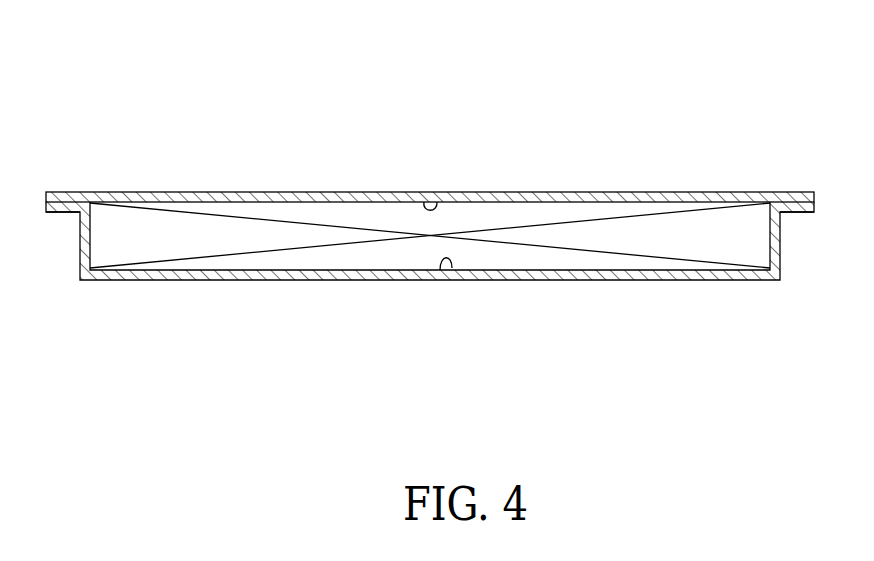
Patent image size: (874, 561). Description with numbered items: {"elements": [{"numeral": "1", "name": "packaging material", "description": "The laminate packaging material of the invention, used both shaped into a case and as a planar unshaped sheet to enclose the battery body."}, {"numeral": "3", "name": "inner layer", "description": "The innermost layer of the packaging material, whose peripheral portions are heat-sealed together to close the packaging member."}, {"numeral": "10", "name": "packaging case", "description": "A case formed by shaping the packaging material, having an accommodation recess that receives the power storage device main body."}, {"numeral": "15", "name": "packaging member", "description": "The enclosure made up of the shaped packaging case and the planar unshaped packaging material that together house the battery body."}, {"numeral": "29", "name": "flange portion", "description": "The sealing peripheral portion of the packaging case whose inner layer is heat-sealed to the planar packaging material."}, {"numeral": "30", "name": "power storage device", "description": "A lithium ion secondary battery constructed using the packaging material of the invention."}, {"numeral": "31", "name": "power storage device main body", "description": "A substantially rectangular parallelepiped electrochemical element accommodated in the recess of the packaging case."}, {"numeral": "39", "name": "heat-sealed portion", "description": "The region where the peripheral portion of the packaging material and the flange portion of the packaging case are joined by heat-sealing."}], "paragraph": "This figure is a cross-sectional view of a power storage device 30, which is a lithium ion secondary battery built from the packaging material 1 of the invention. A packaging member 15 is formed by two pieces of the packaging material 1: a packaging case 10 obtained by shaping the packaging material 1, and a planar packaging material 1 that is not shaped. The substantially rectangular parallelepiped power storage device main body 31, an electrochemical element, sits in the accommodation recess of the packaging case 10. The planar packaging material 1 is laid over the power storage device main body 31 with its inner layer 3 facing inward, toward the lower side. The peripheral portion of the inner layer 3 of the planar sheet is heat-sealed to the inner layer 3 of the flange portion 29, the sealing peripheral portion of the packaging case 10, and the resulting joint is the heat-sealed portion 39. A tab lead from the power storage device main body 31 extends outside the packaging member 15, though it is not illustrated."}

The top plate 1 is at (340, 192).
The layer 3 is at (435, 197).
The bottom plate 10 is at (285, 274).
The panel assembly 15 is at (353, 108).
The flange lip 29 is at (57, 213).
The structure 30 is at (660, 100).
The diagonal brace 31 is at (548, 243).
The tray 39 is at (68, 195).